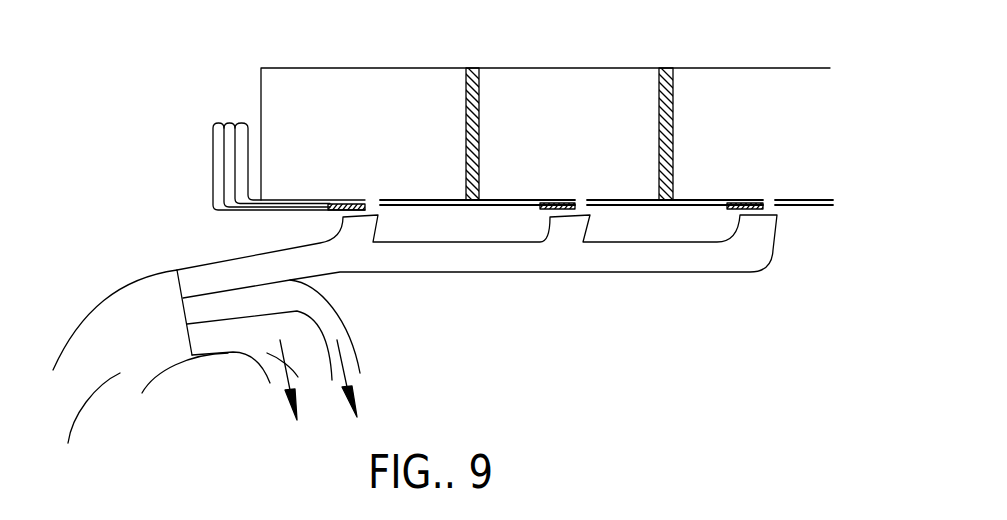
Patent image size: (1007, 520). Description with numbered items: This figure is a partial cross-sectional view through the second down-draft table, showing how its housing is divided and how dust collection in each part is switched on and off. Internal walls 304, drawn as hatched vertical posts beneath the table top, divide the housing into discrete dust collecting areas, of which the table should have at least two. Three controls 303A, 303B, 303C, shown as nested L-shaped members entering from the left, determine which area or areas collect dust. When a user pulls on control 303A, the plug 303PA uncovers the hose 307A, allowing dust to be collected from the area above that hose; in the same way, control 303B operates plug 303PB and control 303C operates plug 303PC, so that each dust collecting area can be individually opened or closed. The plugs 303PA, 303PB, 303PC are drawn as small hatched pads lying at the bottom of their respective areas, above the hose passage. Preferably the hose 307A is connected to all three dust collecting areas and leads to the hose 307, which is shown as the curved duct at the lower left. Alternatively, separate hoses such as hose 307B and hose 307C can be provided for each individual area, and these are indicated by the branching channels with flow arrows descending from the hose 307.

The control 303A is at (217, 122).
The control 303B is at (233, 142).
The control 303C is at (238, 187).
The plug 303PA is at (755, 200).
The plug 303PB is at (563, 200).
The plug 303PC is at (357, 200).
The internal wall 304 is at (662, 97).
The hose 307 is at (68, 443).
The hose 307A is at (480, 258).
The hose 307B is at (333, 315).
The hose 307C is at (250, 360).